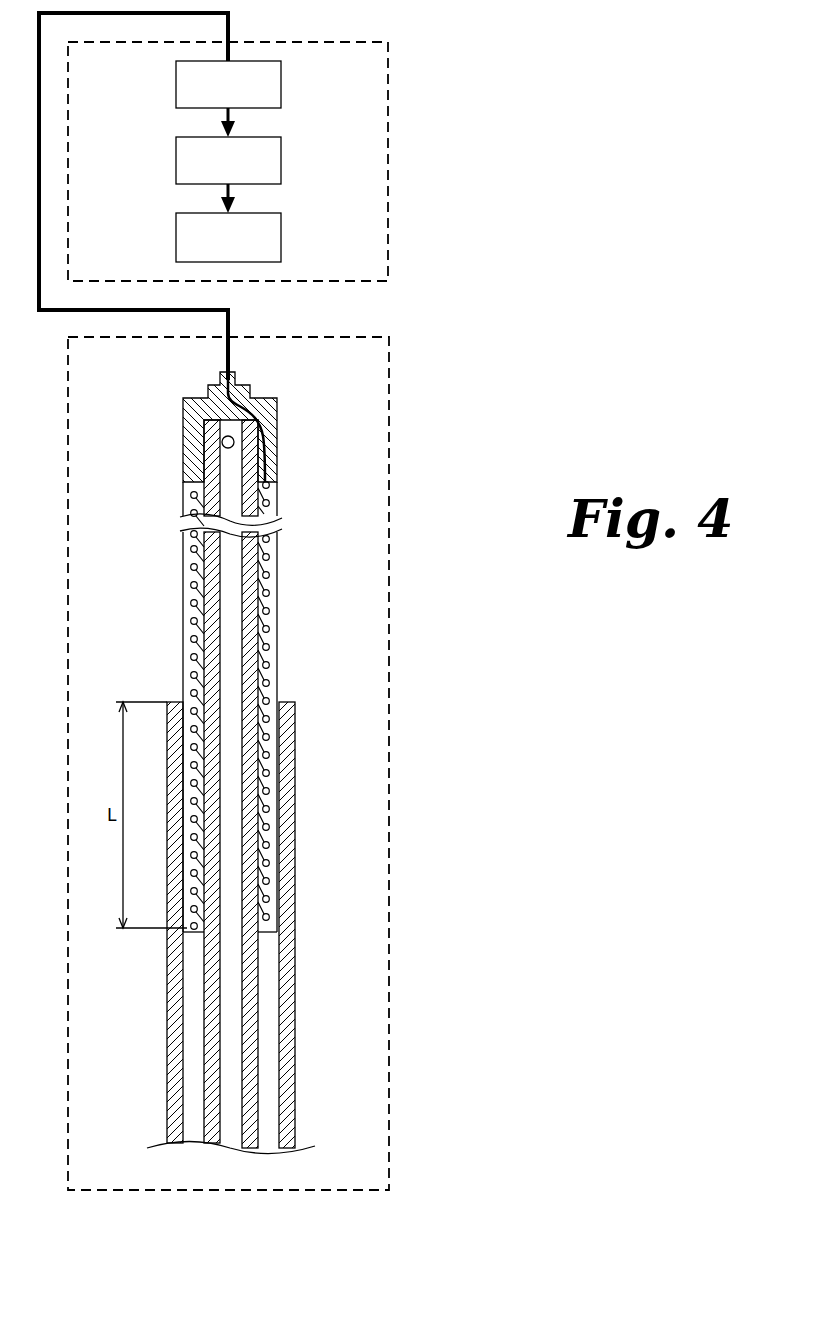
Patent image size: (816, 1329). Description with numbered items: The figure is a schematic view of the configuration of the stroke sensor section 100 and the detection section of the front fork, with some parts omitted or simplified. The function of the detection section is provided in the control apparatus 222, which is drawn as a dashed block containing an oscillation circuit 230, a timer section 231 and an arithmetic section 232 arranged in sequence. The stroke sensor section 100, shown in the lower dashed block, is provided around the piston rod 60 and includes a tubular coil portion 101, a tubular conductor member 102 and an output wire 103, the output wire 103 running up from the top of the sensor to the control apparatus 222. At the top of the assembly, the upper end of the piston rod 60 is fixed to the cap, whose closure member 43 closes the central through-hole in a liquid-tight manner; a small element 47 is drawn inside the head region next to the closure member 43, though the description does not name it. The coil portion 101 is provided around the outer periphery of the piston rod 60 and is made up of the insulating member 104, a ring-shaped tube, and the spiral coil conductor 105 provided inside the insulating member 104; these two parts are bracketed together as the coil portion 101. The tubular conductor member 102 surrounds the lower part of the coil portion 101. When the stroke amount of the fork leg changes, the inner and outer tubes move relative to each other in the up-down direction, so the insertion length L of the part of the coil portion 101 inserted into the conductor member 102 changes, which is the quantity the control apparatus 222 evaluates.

The control apparatus 222 is at (499, 151).
The oscillation circuit 230 is at (283, 83).
The timer section 231 is at (283, 159).
The arithmetic section 232 is at (283, 235).
The stroke sensor section 100 is at (459, 503).
The output wire 103 is at (232, 360).
The closure member 43 is at (193, 408).
The sensor element 47 is at (222, 442).
The piston rod 60 is at (208, 630).
The coil portion 101 is at (286, 707).
The insulating member 104 is at (268, 624).
The coil conductor 105 is at (268, 646).
The conductor member 102 is at (296, 1031).